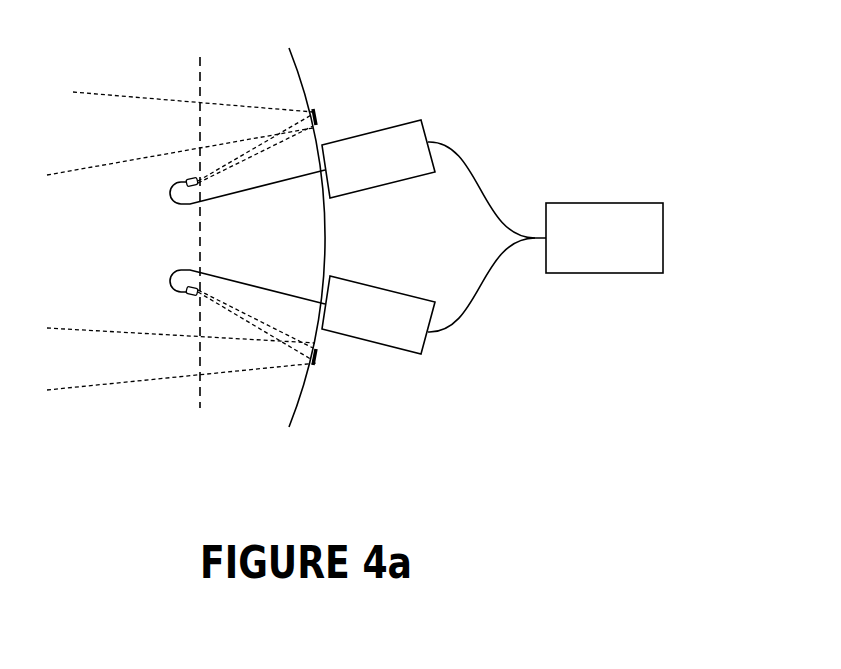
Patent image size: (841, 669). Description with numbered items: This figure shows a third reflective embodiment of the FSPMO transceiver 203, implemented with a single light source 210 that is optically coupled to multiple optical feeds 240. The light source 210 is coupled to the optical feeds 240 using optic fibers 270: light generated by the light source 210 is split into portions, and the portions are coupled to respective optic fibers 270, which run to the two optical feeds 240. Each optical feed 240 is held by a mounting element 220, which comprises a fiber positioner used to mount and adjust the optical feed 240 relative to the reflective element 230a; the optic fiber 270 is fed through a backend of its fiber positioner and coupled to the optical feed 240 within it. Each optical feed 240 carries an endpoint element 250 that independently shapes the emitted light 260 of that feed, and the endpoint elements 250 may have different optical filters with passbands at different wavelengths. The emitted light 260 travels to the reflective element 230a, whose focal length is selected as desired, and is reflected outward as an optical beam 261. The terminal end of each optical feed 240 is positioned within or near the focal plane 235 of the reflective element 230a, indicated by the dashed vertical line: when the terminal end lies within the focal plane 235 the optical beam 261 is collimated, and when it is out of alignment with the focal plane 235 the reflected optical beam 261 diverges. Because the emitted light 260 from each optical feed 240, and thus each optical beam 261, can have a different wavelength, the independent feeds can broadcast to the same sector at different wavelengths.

The FSPMO transceiver 203 is at (586, 47).
The light source 210 is at (663, 220).
The mounting element 220 is at (384, 185).
The reflective element 230a is at (298, 62).
The focal plane 235 is at (200, 408).
The optical feed 240 is at (247, 193).
The endpoint element 250 is at (186, 182).
The emitted light 260 is at (316, 117).
The optical beam 261 is at (112, 100).
The optic fiber 270 is at (478, 183).